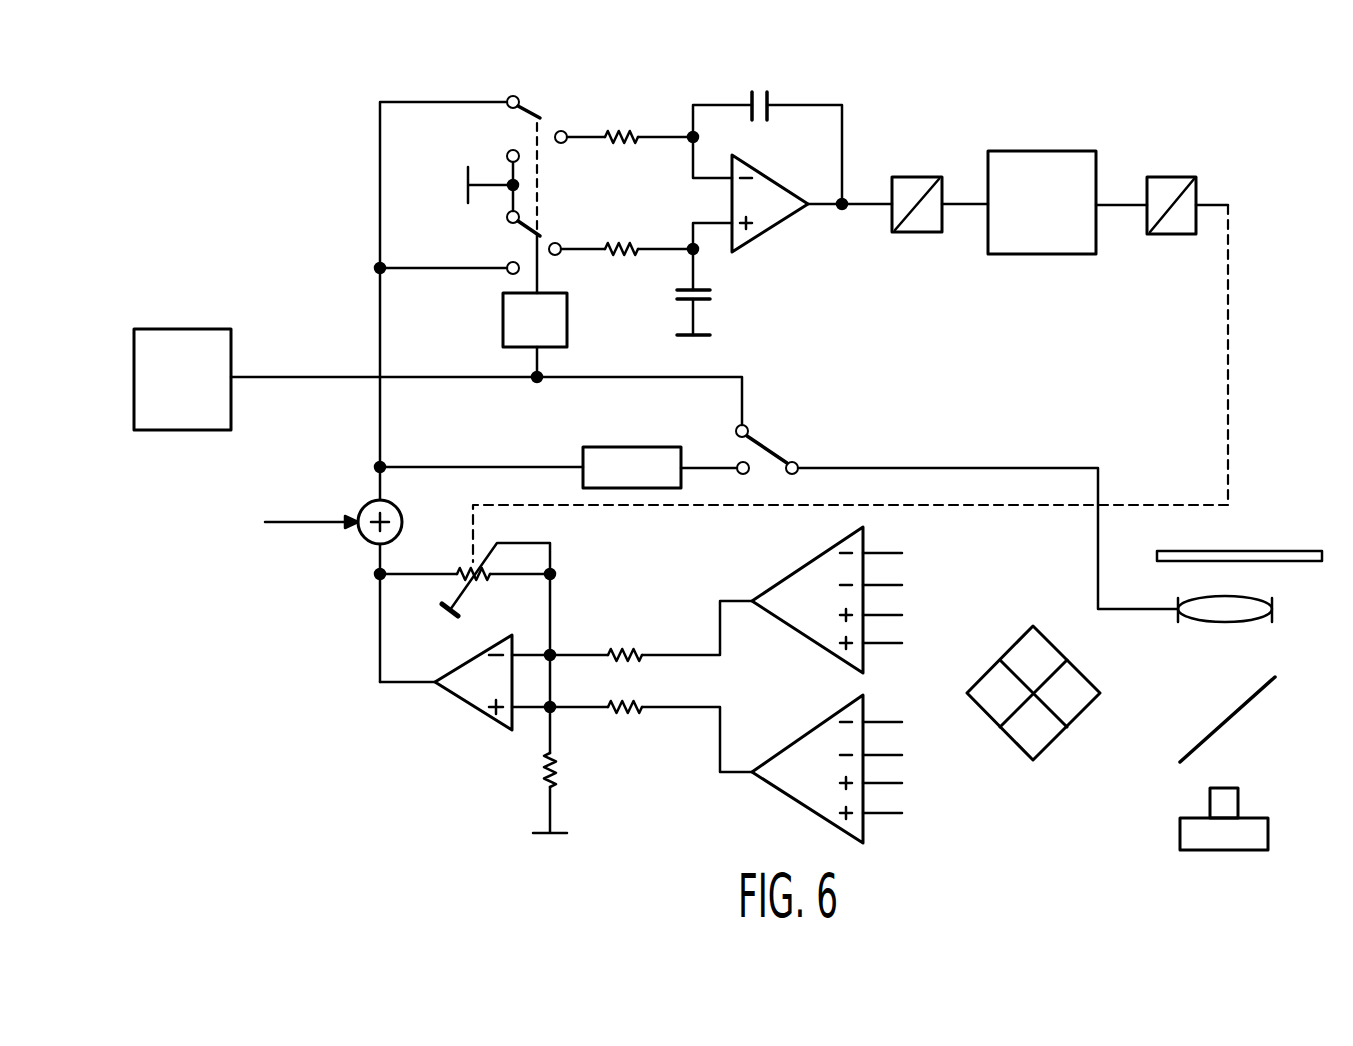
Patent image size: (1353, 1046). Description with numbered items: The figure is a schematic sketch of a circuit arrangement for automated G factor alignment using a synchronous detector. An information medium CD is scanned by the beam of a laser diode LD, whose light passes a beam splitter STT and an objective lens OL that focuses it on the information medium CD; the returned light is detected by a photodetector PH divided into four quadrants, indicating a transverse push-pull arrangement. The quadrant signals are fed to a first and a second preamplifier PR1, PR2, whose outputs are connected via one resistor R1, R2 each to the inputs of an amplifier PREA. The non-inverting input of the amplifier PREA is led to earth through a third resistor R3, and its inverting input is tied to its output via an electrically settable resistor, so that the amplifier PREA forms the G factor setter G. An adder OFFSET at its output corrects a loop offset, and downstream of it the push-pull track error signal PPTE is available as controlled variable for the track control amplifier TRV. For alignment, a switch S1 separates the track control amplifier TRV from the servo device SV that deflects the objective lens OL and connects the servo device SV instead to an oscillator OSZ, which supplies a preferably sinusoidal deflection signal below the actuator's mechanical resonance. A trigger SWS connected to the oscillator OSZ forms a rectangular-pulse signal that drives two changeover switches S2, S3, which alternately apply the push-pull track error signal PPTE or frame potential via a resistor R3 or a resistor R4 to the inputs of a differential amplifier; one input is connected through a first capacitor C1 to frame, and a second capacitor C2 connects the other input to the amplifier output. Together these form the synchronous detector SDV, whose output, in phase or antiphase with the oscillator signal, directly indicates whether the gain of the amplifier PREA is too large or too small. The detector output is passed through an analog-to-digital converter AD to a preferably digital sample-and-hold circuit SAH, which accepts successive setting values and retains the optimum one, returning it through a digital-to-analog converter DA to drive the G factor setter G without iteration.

The oscillator OSZ is at (438, 379).
The push-pull track error signal PPTE is at (481, 449).
The adder for offset correction OFFSET is at (323, 516).
The track control amplifier TRV is at (660, 467).
The switch S1 is at (957, 513).
The changeover switch S2 is at (543, 119).
The changeover switch S3 is at (543, 233).
The trigger SWS is at (535, 306).
The resistor R1 is at (651, 631).
The resistor R2 is at (651, 736).
The resistor R3 is at (600, 464).
The resistor R4 is at (627, 234).
The first capacitor C1 is at (711, 308).
The second capacitor C2 is at (767, 130).
The synchronous detector SDV is at (790, 211).
The analog-to-digital converter AD is at (940, 187).
The sample-and-hold circuit SAH is at (1067, 202).
The digital-to-analog converter DA is at (1187, 189).
The G factor setter G is at (467, 564).
The amplifier PREA is at (465, 705).
The first preamplifier PR1 is at (837, 597).
The second preamplifier PR2 is at (837, 769).
The photodetector PH is at (1033, 712).
The information medium CD is at (1275, 548).
The objective lens OL is at (1255, 598).
The servo device SV is at (1178, 620).
The beam splitter STT is at (1238, 716).
The laser diode LD is at (1257, 818).